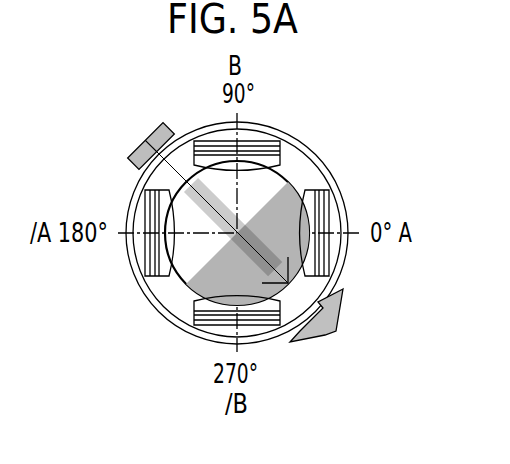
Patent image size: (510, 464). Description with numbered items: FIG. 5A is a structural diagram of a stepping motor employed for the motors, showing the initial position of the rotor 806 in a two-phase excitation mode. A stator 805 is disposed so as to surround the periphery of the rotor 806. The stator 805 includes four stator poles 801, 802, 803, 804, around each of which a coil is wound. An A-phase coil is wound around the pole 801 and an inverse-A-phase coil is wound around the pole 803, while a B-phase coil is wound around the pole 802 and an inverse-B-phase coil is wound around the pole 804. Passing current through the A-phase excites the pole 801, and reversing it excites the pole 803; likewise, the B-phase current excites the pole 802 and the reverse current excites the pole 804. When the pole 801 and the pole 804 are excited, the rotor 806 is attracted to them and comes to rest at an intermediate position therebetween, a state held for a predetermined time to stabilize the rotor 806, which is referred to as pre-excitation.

The pole 801 is at (334, 200).
The pole 802 is at (263, 143).
The pole 803 is at (140, 258).
The pole 804 is at (212, 327).
The stator 805 is at (340, 310).
The rotor 806 is at (139, 146).